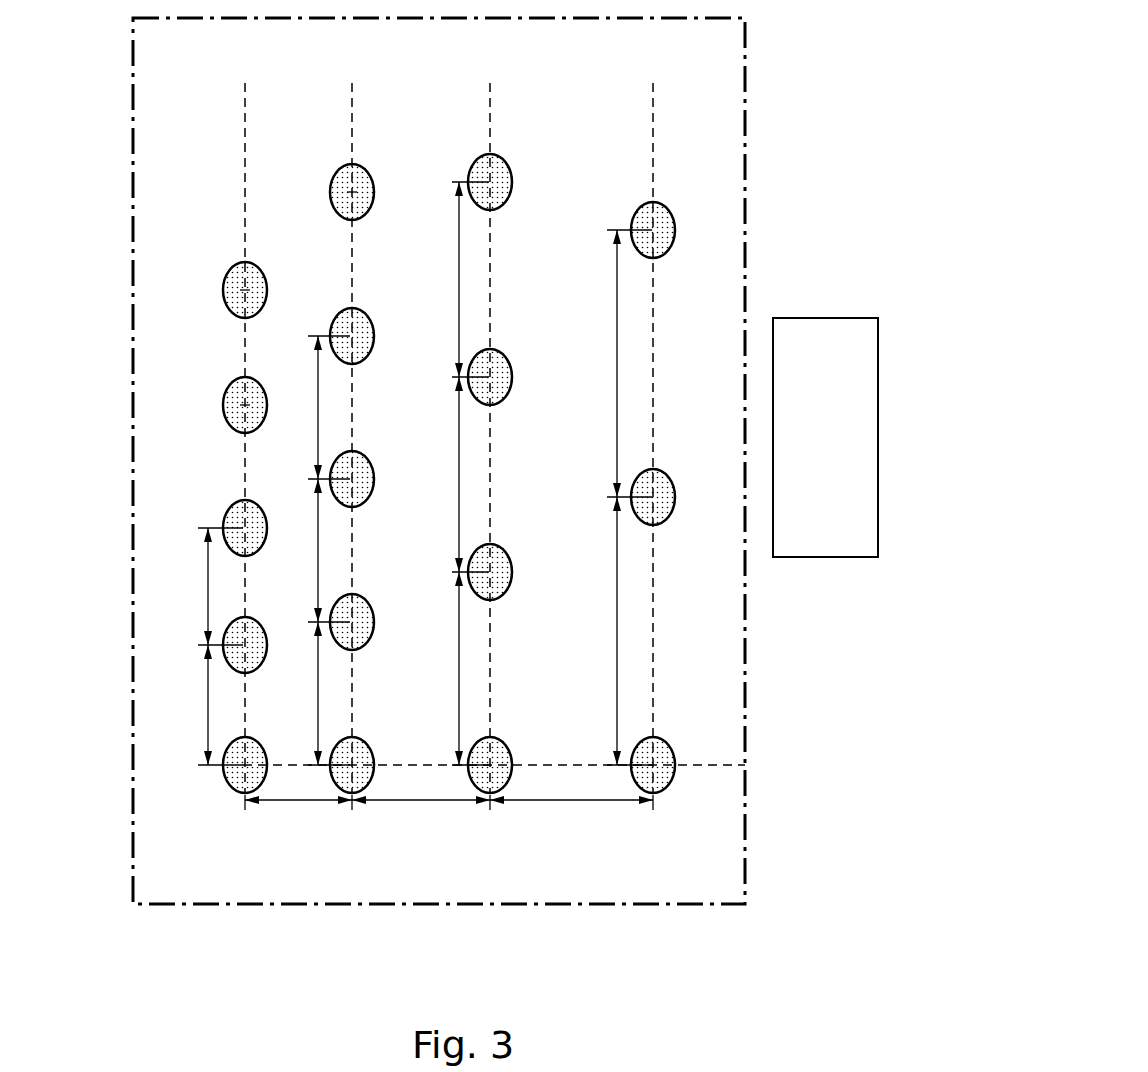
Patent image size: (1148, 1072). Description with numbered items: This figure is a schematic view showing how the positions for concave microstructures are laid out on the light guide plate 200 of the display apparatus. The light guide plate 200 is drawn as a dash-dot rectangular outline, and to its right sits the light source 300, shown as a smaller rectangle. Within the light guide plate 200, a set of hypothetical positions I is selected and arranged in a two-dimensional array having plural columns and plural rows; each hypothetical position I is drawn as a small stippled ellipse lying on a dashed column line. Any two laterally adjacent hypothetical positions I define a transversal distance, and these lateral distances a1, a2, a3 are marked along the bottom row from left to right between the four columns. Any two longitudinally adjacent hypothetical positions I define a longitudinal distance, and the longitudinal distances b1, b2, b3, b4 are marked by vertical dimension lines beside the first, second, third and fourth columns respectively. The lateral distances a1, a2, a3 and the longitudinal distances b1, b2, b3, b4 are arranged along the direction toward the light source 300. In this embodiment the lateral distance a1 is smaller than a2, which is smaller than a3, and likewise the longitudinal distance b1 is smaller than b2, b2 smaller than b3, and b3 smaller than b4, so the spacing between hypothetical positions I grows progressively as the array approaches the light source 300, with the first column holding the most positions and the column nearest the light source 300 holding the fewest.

The light guide plate 200 is at (733, 812).
The light source 300 is at (820, 335).
The hypothetical positions I is at (228, 786).
The lateral distance a1 is at (298, 816).
The lateral distance a2 is at (421, 816).
The lateral distance a3 is at (571, 816).
The longitudinal distance b1 is at (210, 646).
The longitudinal distance b2 is at (319, 550).
The longitudinal distance b3 is at (458, 473).
The longitudinal distance b4 is at (619, 497).